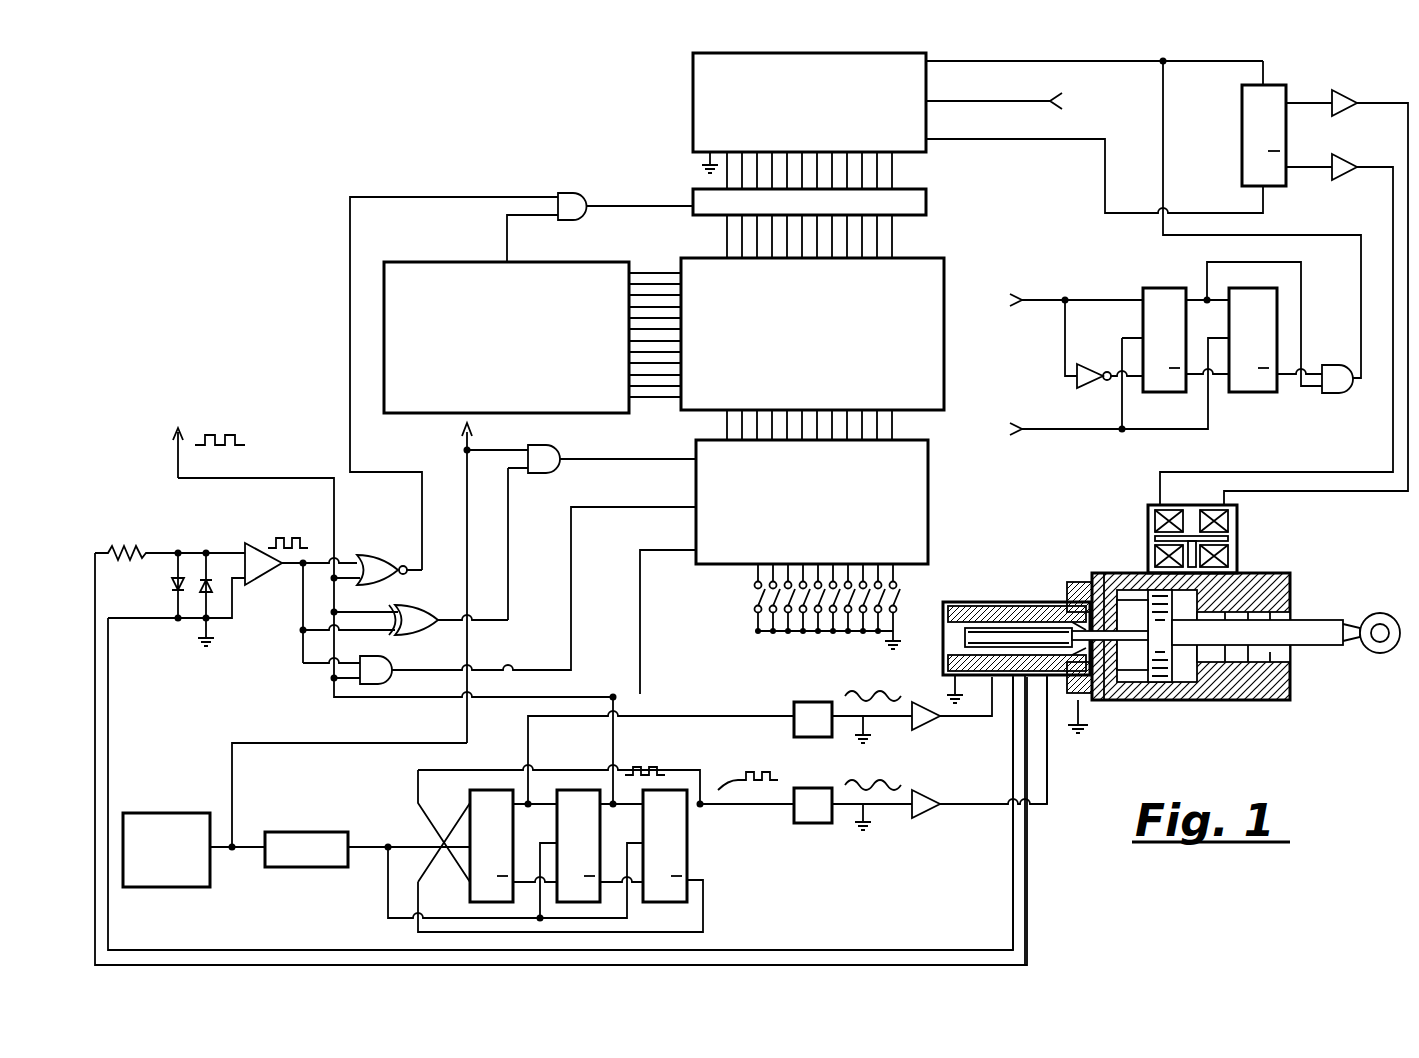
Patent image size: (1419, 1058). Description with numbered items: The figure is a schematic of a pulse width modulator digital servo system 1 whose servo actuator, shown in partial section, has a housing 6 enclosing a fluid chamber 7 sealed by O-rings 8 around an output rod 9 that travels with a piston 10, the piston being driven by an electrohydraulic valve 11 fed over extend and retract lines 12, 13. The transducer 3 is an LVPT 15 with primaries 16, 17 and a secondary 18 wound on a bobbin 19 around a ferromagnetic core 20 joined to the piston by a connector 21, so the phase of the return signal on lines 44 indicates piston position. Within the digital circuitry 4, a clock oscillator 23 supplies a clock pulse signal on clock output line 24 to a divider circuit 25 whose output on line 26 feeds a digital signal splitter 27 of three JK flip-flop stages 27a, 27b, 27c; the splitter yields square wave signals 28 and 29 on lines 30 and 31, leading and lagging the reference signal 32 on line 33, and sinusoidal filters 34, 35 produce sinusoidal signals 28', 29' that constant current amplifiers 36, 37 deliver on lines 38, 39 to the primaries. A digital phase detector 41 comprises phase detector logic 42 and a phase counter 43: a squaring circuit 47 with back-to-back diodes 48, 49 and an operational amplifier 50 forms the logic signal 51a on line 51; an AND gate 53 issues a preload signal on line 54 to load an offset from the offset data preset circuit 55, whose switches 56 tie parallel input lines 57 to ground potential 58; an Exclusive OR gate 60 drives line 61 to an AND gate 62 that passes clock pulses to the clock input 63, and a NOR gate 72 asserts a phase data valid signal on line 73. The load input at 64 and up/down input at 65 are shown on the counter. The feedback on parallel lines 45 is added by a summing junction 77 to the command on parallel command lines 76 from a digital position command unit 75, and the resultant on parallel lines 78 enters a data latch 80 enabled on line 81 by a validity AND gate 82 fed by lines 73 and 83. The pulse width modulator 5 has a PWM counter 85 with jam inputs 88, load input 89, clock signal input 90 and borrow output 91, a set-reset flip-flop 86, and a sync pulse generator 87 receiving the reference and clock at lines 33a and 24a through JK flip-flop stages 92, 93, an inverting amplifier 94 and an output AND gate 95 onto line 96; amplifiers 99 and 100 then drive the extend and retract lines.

The pulse width modulator digital servo system 1 is at (1063, 752).
The transducer 3 is at (1020, 568).
The digital circuitry 4 is at (290, 335).
The pulse width modulator 5 is at (1296, 72).
The housing 6 is at (1290, 688).
The fluid chamber 7 is at (1185, 672).
The O-rings 8 is at (1272, 640).
The output rod 9 is at (1330, 630).
The piston 10 is at (1135, 612).
The electrohydraulic valve 11 is at (1148, 515).
The extend line 12 is at (1408, 493).
The retract line 13 is at (1393, 448).
The LVPT 15 is at (1015, 598).
The primary 16 is at (960, 606).
The primary 17 is at (1062, 606).
The secondary 18 is at (1012, 606).
The bobbin 19 is at (965, 635).
The core 20 is at (950, 632).
The connector 21 is at (1104, 600).
The clock oscillator 23 is at (162, 813).
The clock output line 24 is at (472, 441).
The clock input line 24a is at (1052, 428).
The divider circuit 25 is at (315, 832).
The line 26 is at (372, 850).
The digital signal splitter 27 is at (412, 788).
The JK flip-flop stage 27a is at (560, 851).
The JK flip-flop stage 27b is at (570, 790).
The JK flip-flop stage 27c is at (687, 856).
The 400 Hz signal 28 is at (653, 740).
The sinusoidal signal 28' is at (863, 685).
The 400 Hz signal 29 is at (762, 800).
The sinusoidal signal 29' is at (877, 771).
The line 30 is at (672, 716).
The line 31 is at (595, 770).
The 400 Hz reference signal 32 is at (674, 776).
The line 33 is at (238, 478).
The reference input line 33a is at (1040, 304).
The sinusoidal filter 34 is at (794, 733).
The sinusoidal filter 35 is at (812, 823).
The constant current amplifier 36 is at (928, 724).
The constant current amplifier 37 is at (930, 814).
The line 38 is at (992, 718).
The line 39 is at (955, 803).
The digital phase detector 41 is at (292, 408).
The phase detector logic 42 is at (398, 535).
The phase counter 43 is at (928, 468).
The lines 44 is at (1027, 880).
The parallel lines 45 is at (900, 424).
The squaring circuit 47 is at (235, 642).
The diode 48 is at (172, 584).
The diode 49 is at (220, 592).
The operational amplifier 50 is at (260, 580).
The line 51 is at (292, 566).
The logic signal 51a is at (278, 536).
The AND gate 53 is at (390, 660).
The line 54 is at (544, 578).
The offset data preset circuit 55 is at (748, 632).
The switches 56 is at (750, 610).
The parallel input lines 57 is at (752, 578).
The ground potential 58 is at (888, 648).
The Exclusive OR gate 60 is at (432, 615).
The line 61 is at (508, 512).
The AND gate 62 is at (552, 445).
The clock input 63 is at (692, 462).
The load input 64 is at (640, 580).
The up/down input 65 is at (690, 560).
The NOR gate 72 is at (378, 556).
The line 73 is at (418, 197).
The digital position command unit 75 is at (438, 262).
The parallel command lines 76 is at (650, 252).
The summing junction 77 is at (944, 278).
The parallel lines 78 is at (895, 244).
The data latch 80 is at (926, 203).
The line 81 is at (605, 205).
The validity AND gate 82 is at (565, 193).
The line 83 is at (530, 215).
The PWM counter 85 is at (693, 86).
The set-reset flip-flop 86 is at (1286, 133).
The sync pulse generator 87 is at (1367, 306).
The jam inputs 88 is at (903, 160).
The load input 89 is at (975, 62).
The clock signal input 90 is at (990, 102).
The borrow output 91 is at (948, 140).
The JK flip-flop stage 92 is at (1148, 288).
The JK flip-flop stage 93 is at (1245, 288).
The inverting amplifier 94 is at (1093, 368).
The output AND gate 95 is at (1334, 365).
The line 96 is at (1361, 290).
The amplifier 99 is at (1346, 92).
The amplifier 100 is at (1344, 156).